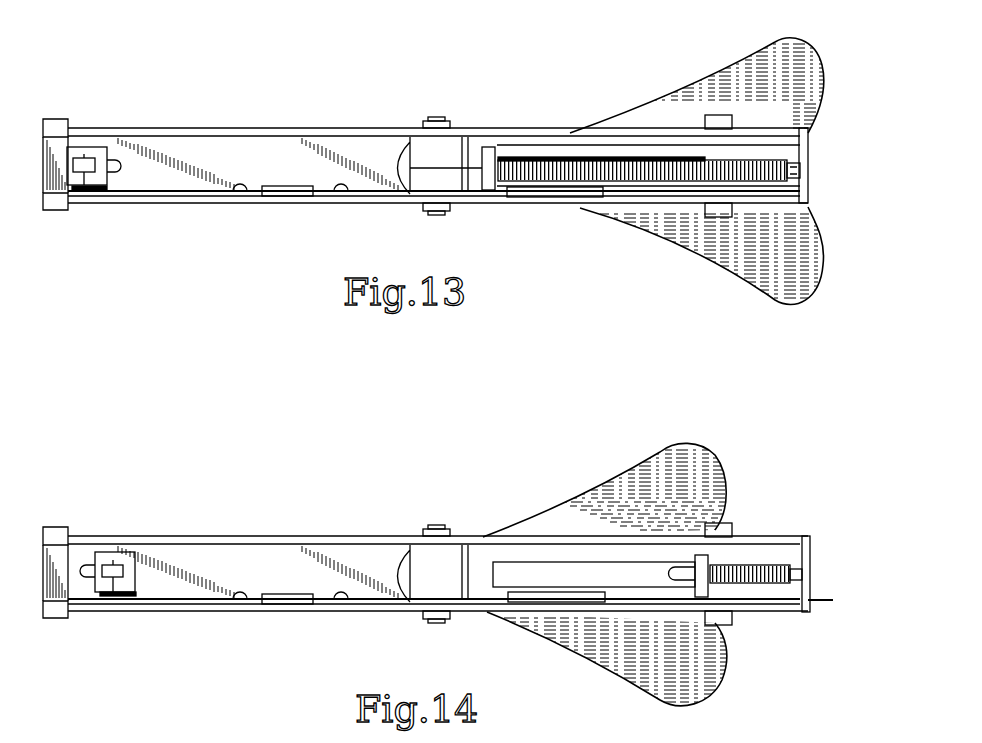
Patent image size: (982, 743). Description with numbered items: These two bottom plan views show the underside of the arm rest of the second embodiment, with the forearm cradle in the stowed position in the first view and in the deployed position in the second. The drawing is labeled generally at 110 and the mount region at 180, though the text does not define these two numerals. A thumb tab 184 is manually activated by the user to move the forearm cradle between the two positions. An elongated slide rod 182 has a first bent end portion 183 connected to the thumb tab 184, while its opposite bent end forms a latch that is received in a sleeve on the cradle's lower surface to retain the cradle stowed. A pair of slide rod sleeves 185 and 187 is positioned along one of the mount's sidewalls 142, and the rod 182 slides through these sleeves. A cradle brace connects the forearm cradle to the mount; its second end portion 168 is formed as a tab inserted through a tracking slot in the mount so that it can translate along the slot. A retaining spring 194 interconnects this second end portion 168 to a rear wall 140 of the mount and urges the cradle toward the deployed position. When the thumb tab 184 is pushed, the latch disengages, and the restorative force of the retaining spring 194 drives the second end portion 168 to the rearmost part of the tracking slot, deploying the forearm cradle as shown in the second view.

In FIG. 13, the instrument body 110 is at (330, 108).
In FIG. 14, the instrument body 110 is at (332, 518).
In FIG. 13, the rear wall 140 is at (808, 158).
In FIG. 14, the rear wall 140 is at (810, 558).
In FIG. 13, the sidewall 142 is at (200, 193).
In FIG. 14, the sidewall 142 is at (200, 601).
In FIG. 13, the second end portion 168 is at (490, 145).
In FIG. 14, the second end portion 168 is at (702, 555).
In FIG. 13, the housing 180 is at (775, 150).
In FIG. 14, the housing 180 is at (98, 517).
In FIG. 13, the slide rod 182 is at (241, 192).
In FIG. 14, the slide rod 182 is at (241, 600).
In FIG. 13, the first bent end portion 183 is at (78, 188).
In FIG. 14, the first bent end portion 183 is at (98, 596).
In FIG. 13, the thumb tab 184 is at (93, 160).
In FIG. 14, the thumb tab 184 is at (118, 571).
In FIG. 13, the slide rod sleeve 185 is at (290, 186).
In FIG. 14, the slide rod sleeve 185 is at (290, 594).
In FIG. 13, the slide rod sleeve 187 is at (530, 197).
In FIG. 14, the slide rod sleeve 187 is at (560, 603).
In FIG. 13, the retaining spring 194 is at (548, 162).
In FIG. 14, the retaining spring 194 is at (738, 570).